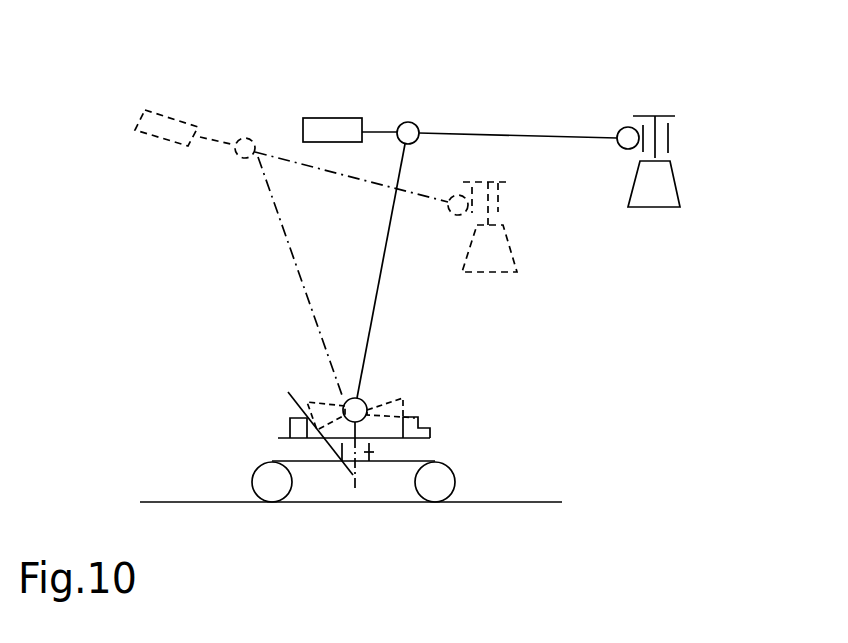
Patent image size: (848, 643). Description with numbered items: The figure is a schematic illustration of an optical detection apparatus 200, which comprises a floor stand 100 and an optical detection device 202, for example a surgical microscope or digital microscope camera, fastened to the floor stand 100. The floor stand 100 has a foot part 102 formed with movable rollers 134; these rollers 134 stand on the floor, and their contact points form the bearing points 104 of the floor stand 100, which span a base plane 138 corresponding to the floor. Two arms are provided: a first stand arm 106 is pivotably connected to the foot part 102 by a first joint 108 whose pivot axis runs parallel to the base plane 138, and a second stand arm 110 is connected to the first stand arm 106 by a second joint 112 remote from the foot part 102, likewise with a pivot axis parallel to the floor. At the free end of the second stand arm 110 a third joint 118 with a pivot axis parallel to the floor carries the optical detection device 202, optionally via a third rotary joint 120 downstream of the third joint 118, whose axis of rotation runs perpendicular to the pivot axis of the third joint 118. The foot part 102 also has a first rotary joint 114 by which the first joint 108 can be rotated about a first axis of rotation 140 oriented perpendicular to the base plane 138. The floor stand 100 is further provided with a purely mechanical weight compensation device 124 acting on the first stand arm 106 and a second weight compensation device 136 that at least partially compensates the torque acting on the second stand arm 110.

The floor stand 100 is at (378, 108).
The foot part 102 is at (290, 461).
The bearing points 104 is at (273, 503).
The first stand arm 106 is at (376, 300).
The first joint 108 is at (368, 400).
The second stand arm 110 is at (490, 132).
The second joint 112 is at (408, 128).
The first rotary joint 114 is at (367, 452).
The third joint 118 is at (625, 137).
The third rotary joint 120 is at (657, 143).
The weight compensation device 124 is at (413, 413).
The rollers 134 is at (258, 480).
The second weight compensation device 136 is at (320, 130).
The base plane 138 is at (357, 503).
The first axis of rotation 140 is at (306, 414).
The optical detection apparatus 200 is at (687, 80).
The optical detection device 202 is at (662, 187).